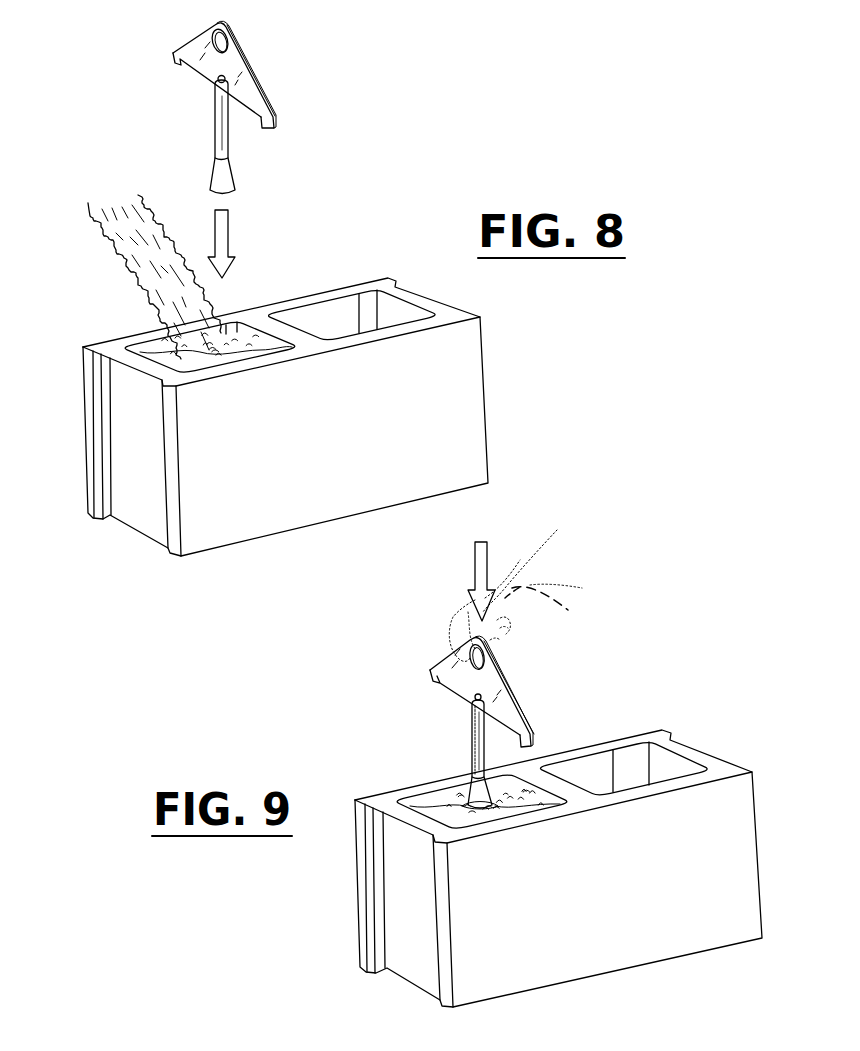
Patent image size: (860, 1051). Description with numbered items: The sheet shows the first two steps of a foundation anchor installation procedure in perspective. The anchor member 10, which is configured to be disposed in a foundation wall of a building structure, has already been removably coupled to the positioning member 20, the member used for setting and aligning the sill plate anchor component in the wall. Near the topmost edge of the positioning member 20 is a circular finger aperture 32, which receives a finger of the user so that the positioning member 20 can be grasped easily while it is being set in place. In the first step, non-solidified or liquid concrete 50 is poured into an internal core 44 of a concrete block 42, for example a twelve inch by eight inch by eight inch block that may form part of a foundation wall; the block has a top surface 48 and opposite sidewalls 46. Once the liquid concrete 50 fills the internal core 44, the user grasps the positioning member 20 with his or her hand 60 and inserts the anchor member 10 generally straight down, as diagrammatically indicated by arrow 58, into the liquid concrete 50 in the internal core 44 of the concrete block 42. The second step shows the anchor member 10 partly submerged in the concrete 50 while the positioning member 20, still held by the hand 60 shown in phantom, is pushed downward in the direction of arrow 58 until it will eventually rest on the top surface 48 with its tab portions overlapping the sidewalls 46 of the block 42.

In FIG. 8, the anchor member 10 is at (200, 110).
In FIG. 9, the anchor member 10 is at (456, 734).
In FIG. 8, the positioning member 20 is at (256, 37).
In FIG. 9, the positioning member 20 is at (524, 678).
In FIG. 9, the circular finger aperture 32 is at (470, 665).
In FIG. 8, the concrete block 42 is at (273, 515).
In FIG. 9, the concrete block 42 is at (588, 938).
In FIG. 8, the internal core 44 is at (240, 335).
In FIG. 9, the internal core 44 is at (612, 760).
In FIG. 8, the sidewalls 46 is at (463, 415).
In FIG. 9, the sidewalls 46 is at (697, 828).
In FIG. 8, the top surface 48 is at (257, 357).
In FIG. 9, the top surface 48 is at (553, 803).
In FIG. 8, the non-solidified or liquid concrete 50 is at (128, 245).
In FIG. 9, the non-solidified or liquid concrete 50 is at (425, 800).
In FIG. 8, the arrow 58 is at (222, 230).
In FIG. 9, the arrow 58 is at (482, 565).
In FIG. 9, the hand 60 is at (568, 610).